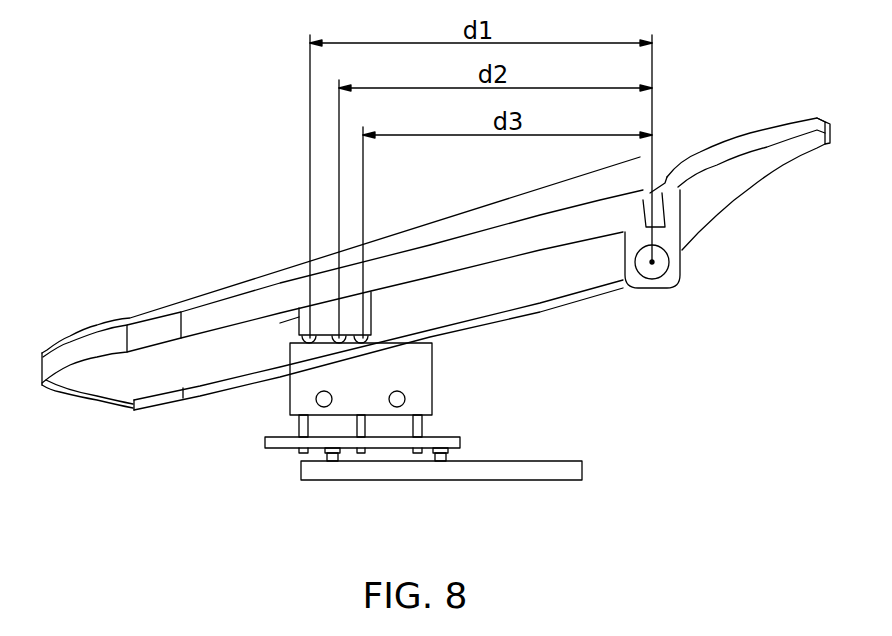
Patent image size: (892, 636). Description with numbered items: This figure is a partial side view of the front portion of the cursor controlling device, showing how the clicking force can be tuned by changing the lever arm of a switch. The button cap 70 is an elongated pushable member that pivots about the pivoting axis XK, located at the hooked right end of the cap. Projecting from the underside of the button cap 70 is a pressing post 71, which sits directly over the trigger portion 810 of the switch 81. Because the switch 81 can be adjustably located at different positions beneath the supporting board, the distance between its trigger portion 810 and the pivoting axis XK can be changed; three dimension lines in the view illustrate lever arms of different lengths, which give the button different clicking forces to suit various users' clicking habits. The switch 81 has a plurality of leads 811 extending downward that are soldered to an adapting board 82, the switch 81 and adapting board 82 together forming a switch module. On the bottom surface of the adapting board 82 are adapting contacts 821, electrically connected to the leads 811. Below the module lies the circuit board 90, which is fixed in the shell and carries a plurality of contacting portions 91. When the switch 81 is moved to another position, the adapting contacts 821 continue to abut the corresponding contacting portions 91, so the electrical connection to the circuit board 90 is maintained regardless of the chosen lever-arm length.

The button cap 70 is at (250, 272).
The pressing post 71 is at (305, 319).
The trigger portion 810 is at (339, 335).
The switch 81 is at (412, 369).
The leads 811 is at (303, 429).
The adapting board 82 is at (440, 442).
The adapting contacts 821 is at (458, 442).
The contacting portions 91 is at (331, 455).
The circuit board 90 is at (565, 450).
The pivoting axis XK is at (657, 266).